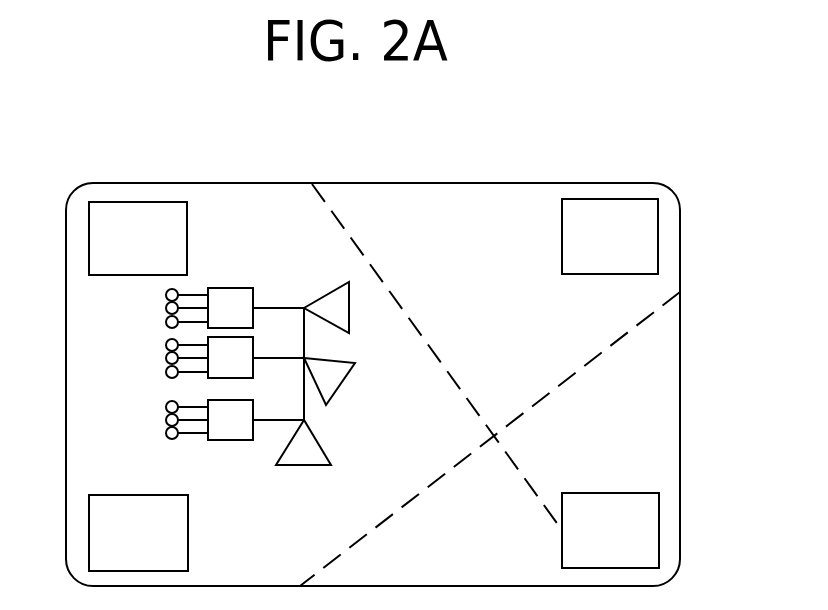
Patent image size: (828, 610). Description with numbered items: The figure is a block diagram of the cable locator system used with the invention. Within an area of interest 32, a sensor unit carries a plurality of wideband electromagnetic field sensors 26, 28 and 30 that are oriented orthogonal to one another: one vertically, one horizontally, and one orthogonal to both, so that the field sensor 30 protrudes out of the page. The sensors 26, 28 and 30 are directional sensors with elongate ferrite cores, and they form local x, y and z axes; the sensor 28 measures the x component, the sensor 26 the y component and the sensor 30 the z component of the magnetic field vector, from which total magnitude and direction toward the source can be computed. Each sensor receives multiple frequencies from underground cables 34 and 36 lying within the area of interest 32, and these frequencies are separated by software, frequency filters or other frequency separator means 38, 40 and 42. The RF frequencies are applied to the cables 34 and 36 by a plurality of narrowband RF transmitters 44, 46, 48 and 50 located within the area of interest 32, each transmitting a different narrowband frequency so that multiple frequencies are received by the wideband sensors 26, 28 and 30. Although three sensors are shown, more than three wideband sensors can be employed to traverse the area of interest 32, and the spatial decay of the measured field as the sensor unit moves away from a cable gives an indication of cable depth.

The wideband electromagnetic field sensor 26 is at (320, 437).
The wideband electromagnetic field sensor 28 is at (350, 303).
The wideband electromagnetic field sensor 30 is at (347, 380).
The area of interest 32 is at (428, 195).
The underground cable 34 is at (418, 327).
The underground cable 36 is at (570, 373).
The frequency separator means 38 is at (232, 288).
The frequency separator means 40 is at (215, 380).
The frequency separator means 42 is at (232, 440).
The narrowband RF transmitter 44 is at (187, 230).
The narrowband RF transmitter 46 is at (135, 495).
The narrowband RF transmitter 48 is at (562, 233).
The narrowband RF transmitter 50 is at (585, 493).